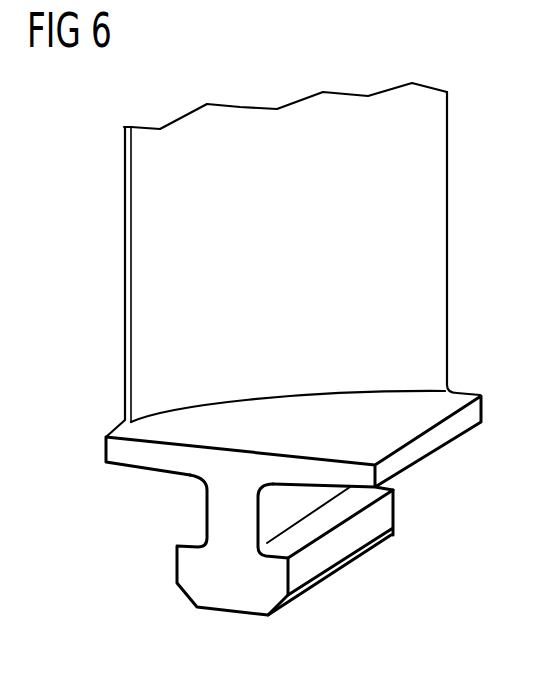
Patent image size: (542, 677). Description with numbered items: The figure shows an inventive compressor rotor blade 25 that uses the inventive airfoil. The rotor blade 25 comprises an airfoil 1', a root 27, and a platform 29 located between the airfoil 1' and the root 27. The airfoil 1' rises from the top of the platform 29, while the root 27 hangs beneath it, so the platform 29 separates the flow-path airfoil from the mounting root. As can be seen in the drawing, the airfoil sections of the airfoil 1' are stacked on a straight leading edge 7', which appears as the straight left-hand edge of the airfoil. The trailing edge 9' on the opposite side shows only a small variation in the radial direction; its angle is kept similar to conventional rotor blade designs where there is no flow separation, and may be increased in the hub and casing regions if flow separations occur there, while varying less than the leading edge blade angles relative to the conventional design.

The airfoil 1' is at (286, 238).
The leading edge 7' is at (102, 282).
The trailing edge 9' is at (473, 243).
The rotor blade 25 is at (261, 327).
The root 27 is at (178, 563).
The platform 29 is at (107, 450).